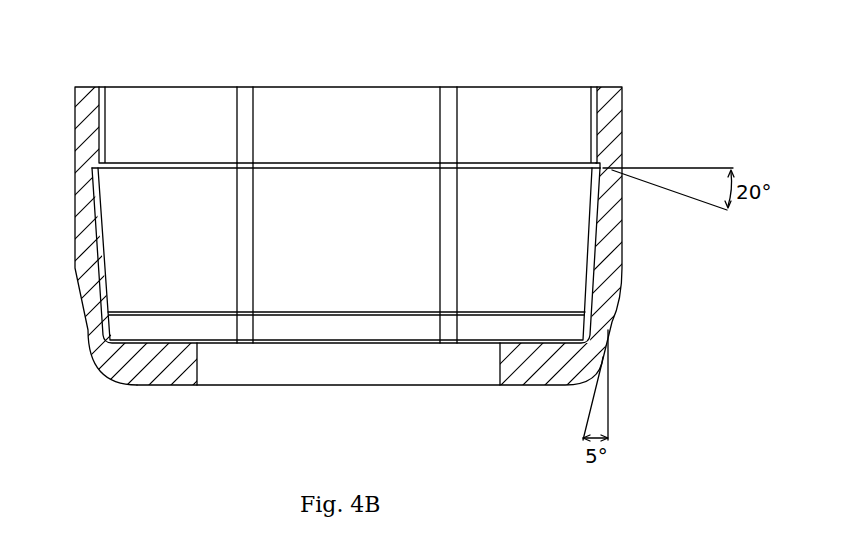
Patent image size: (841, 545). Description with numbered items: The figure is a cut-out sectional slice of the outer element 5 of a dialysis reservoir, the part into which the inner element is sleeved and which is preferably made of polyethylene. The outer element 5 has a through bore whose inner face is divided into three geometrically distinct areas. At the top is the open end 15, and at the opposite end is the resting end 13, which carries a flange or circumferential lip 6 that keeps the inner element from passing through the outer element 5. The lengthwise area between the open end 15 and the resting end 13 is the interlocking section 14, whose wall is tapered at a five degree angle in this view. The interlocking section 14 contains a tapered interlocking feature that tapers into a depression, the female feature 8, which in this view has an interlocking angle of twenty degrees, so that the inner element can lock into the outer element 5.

The outer element 5 is at (366, 73).
The circumferential lip 6 is at (158, 388).
The female feature 8 is at (591, 174).
The resting end 13 is at (116, 327).
The interlocking section 14 is at (108, 243).
The open end 15 is at (115, 123).